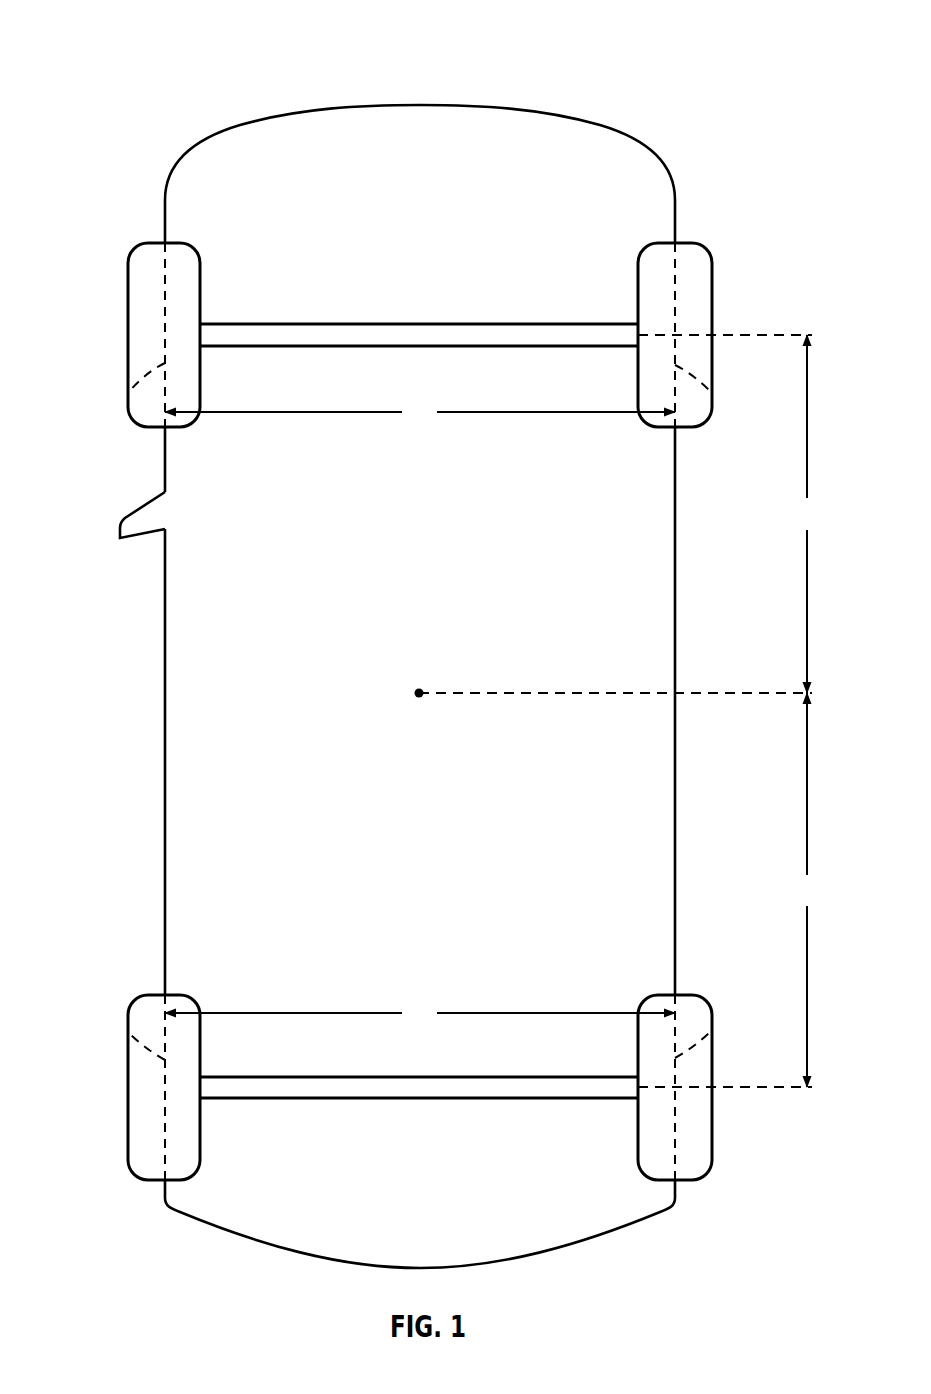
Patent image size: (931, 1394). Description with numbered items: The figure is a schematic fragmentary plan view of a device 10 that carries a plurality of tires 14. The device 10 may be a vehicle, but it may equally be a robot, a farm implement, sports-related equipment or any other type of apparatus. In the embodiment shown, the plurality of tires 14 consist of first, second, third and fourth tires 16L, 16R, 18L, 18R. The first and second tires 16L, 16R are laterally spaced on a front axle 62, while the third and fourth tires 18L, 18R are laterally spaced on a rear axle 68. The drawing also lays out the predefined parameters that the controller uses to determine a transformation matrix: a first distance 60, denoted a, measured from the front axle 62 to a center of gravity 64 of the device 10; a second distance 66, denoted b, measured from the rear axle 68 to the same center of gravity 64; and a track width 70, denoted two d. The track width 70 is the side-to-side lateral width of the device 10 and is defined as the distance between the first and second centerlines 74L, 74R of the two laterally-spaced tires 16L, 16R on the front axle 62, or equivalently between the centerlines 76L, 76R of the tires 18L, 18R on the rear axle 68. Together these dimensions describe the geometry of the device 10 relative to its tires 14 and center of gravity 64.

The device 10 is at (146, 69).
The plurality of tires 14 is at (116, 448).
The first tire 16L is at (128, 270).
The second tire 16R is at (712, 270).
The third tire 18L is at (128, 1152).
The fourth tire 18R is at (712, 1152).
The first distance 60 is at (730, 514).
The front axle 62 is at (273, 347).
The center of gravity 64 is at (418, 689).
The second distance 66 is at (730, 890).
The rear axle 68 is at (273, 1098).
The track width 70 is at (420, 714).
The first centerline 74L is at (128, 393).
The second centerline 74R is at (712, 393).
The first centerline 76L is at (128, 1032).
The second centerline 76R is at (712, 1030).